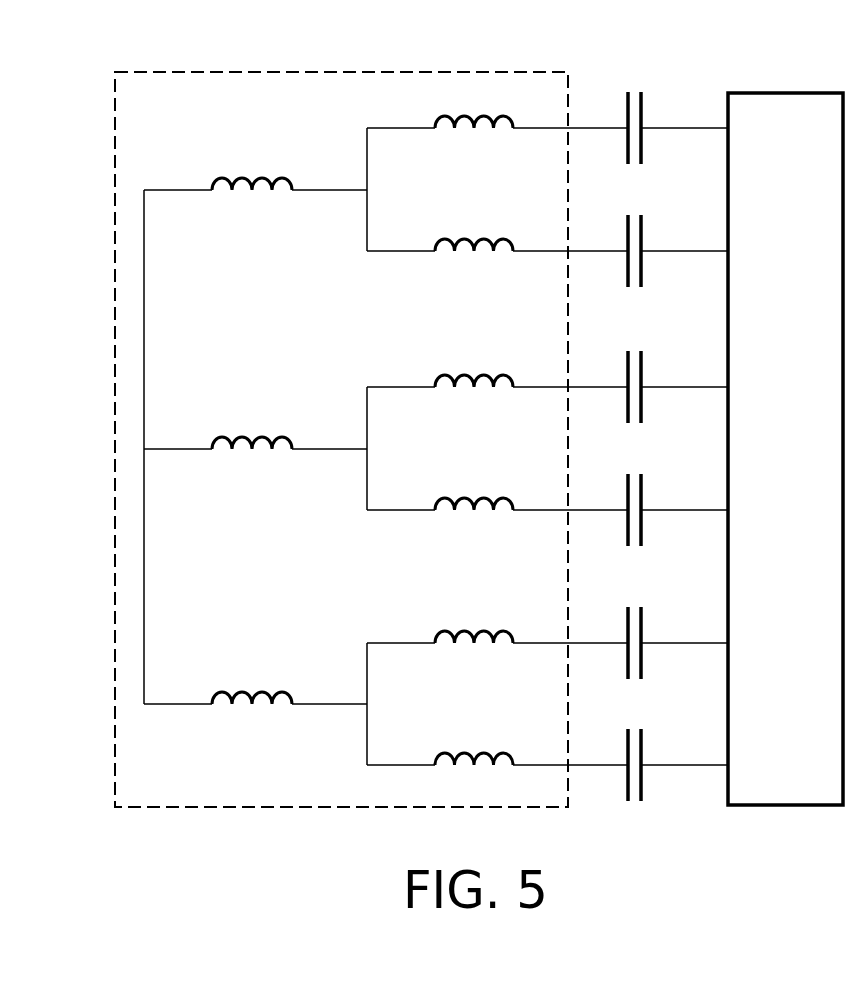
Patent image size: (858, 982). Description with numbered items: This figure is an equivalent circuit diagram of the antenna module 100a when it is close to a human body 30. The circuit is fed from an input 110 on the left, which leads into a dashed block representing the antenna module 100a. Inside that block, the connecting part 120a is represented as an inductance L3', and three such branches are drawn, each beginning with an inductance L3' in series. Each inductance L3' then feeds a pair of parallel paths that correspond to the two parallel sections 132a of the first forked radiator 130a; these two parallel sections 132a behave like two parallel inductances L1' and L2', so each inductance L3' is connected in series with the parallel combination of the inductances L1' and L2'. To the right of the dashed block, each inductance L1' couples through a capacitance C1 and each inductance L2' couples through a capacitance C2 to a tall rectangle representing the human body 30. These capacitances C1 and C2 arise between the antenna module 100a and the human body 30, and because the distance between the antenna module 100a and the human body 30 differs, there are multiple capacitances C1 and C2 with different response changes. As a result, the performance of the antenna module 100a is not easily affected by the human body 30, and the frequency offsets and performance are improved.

The antenna module 100a is at (185, 72).
The input terminal 110 is at (144, 449).
The connecting part 120a is at (180, 190).
The first forked radiator 130a is at (401, 128).
The parallel sections 132a is at (474, 424).
The human body 30 is at (787, 93).
The inductance L1' is at (474, 362).
The inductance L2' is at (474, 484).
The inductance L3' is at (252, 421).
The capacitance C1 is at (632, 367).
The capacitance C2 is at (632, 491).